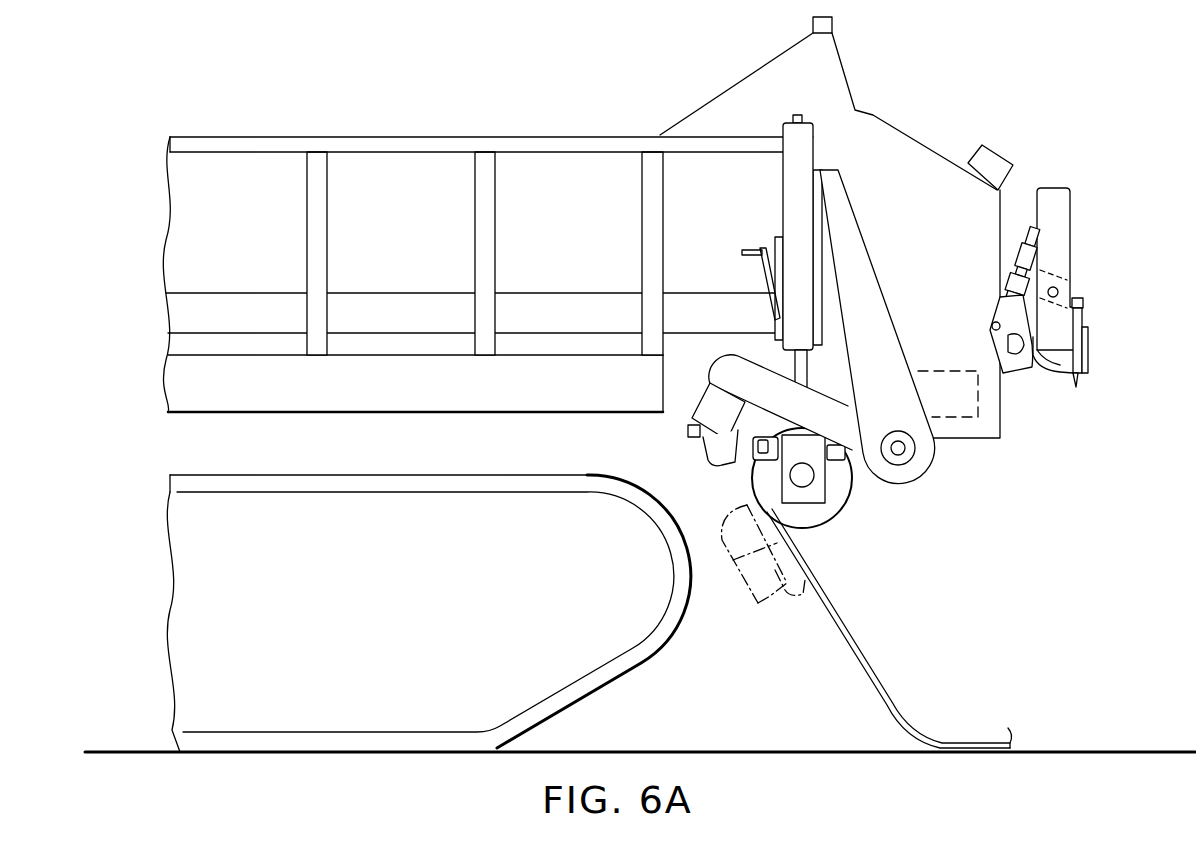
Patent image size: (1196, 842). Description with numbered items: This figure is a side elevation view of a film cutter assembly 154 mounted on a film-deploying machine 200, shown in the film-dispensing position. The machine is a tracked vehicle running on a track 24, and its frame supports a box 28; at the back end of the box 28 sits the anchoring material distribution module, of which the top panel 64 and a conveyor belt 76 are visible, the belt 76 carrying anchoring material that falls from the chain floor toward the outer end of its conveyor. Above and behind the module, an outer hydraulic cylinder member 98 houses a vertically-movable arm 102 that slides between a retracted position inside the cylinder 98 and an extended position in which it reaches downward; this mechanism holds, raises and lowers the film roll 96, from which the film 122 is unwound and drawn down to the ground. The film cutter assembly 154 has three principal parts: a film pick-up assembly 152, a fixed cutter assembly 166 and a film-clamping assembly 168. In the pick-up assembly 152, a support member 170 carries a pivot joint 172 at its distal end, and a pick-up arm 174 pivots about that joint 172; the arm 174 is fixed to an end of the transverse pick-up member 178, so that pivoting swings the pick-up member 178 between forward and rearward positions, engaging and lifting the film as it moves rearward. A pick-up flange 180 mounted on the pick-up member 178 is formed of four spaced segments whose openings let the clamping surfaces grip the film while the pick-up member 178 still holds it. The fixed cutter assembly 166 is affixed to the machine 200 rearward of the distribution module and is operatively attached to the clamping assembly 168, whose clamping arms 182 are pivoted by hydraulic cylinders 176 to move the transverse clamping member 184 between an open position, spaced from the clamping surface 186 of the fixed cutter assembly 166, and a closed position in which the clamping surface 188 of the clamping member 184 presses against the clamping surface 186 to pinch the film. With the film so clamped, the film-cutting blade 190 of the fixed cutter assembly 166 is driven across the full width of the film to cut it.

The film-deploying machine 200 is at (330, 120).
The box 28 is at (452, 137).
The film pick-up assembly 152 is at (750, 184).
The outer hydraulic cylinder member 98 is at (797, 155).
The top panel 64 is at (923, 143).
The film cutter assembly 154 is at (1105, 171).
The film-clamping assembly 168 is at (1020, 218).
The support member 170 is at (840, 226).
The hydraulic cylinders 176 is at (998, 255).
The clamping arms 182 is at (992, 322).
The clamping surface of the clamping member 188 is at (1008, 340).
The pick-up arm 174 is at (738, 362).
The vertically-movable arm 102 is at (801, 366).
The fixed cutter assembly 166 is at (1102, 313).
The film-cutting blade 190 is at (1080, 382).
The clamping surface of the fixed cutter assembly 186 is at (1043, 366).
The clamping member 184 is at (1010, 367).
The pick-up member 178 is at (707, 407).
The pick-up flange 180 is at (719, 497).
The conveyor belt 76 is at (958, 418).
The pivot joint 172 is at (905, 455).
The film roll 96 is at (837, 518).
The film 122 is at (847, 652).
The track 24 is at (588, 695).